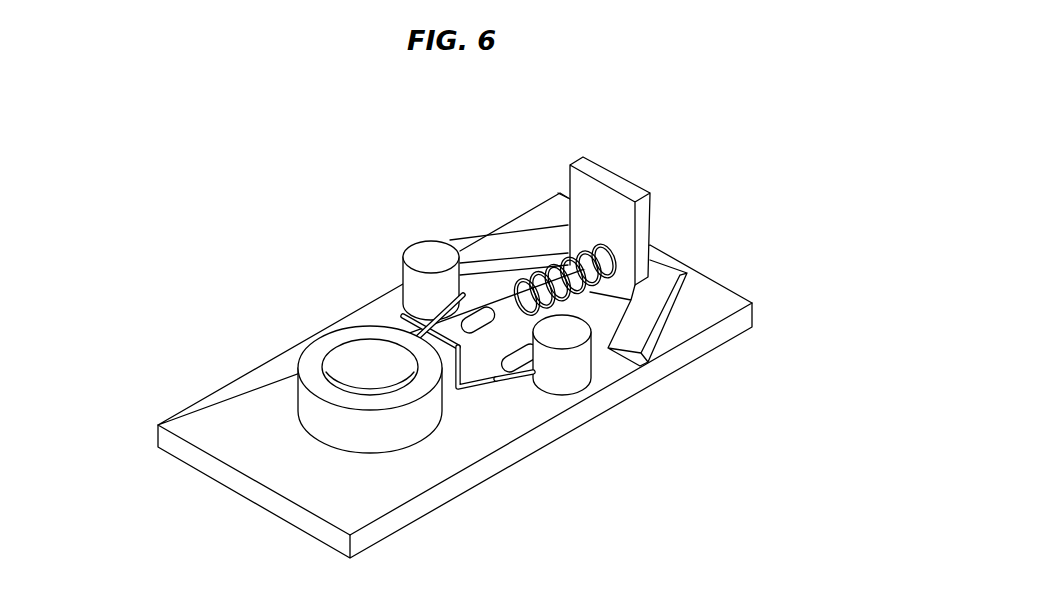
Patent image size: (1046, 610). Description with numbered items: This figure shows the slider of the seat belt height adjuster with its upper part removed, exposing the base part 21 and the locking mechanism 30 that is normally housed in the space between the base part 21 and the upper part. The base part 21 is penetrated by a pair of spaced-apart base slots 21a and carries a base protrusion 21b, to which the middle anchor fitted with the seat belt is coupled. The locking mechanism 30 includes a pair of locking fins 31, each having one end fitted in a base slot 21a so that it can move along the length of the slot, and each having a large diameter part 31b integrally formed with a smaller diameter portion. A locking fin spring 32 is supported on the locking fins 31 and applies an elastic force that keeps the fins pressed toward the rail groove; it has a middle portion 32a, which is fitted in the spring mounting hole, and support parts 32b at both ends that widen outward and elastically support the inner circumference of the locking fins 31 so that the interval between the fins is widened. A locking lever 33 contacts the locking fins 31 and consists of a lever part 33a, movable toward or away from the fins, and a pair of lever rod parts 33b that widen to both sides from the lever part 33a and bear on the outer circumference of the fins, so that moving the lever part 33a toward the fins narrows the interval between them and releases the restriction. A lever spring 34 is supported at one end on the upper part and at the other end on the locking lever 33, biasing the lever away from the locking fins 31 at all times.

The base part 21 is at (432, 378).
The base slots 21a is at (575, 383).
The base protrusion 21b is at (218, 413).
The locking mechanism 30 is at (612, 256).
The locking fins 31 is at (519, 312).
The large diameter part 31b is at (430, 250).
The locking fin spring 32 is at (438, 407).
The middle portion 32a is at (405, 315).
The support parts 32b is at (497, 380).
The locking lever 33 is at (612, 256).
The lever part 33a is at (645, 212).
The lever rod parts 33b is at (492, 243).
The lever spring 34 is at (541, 271).